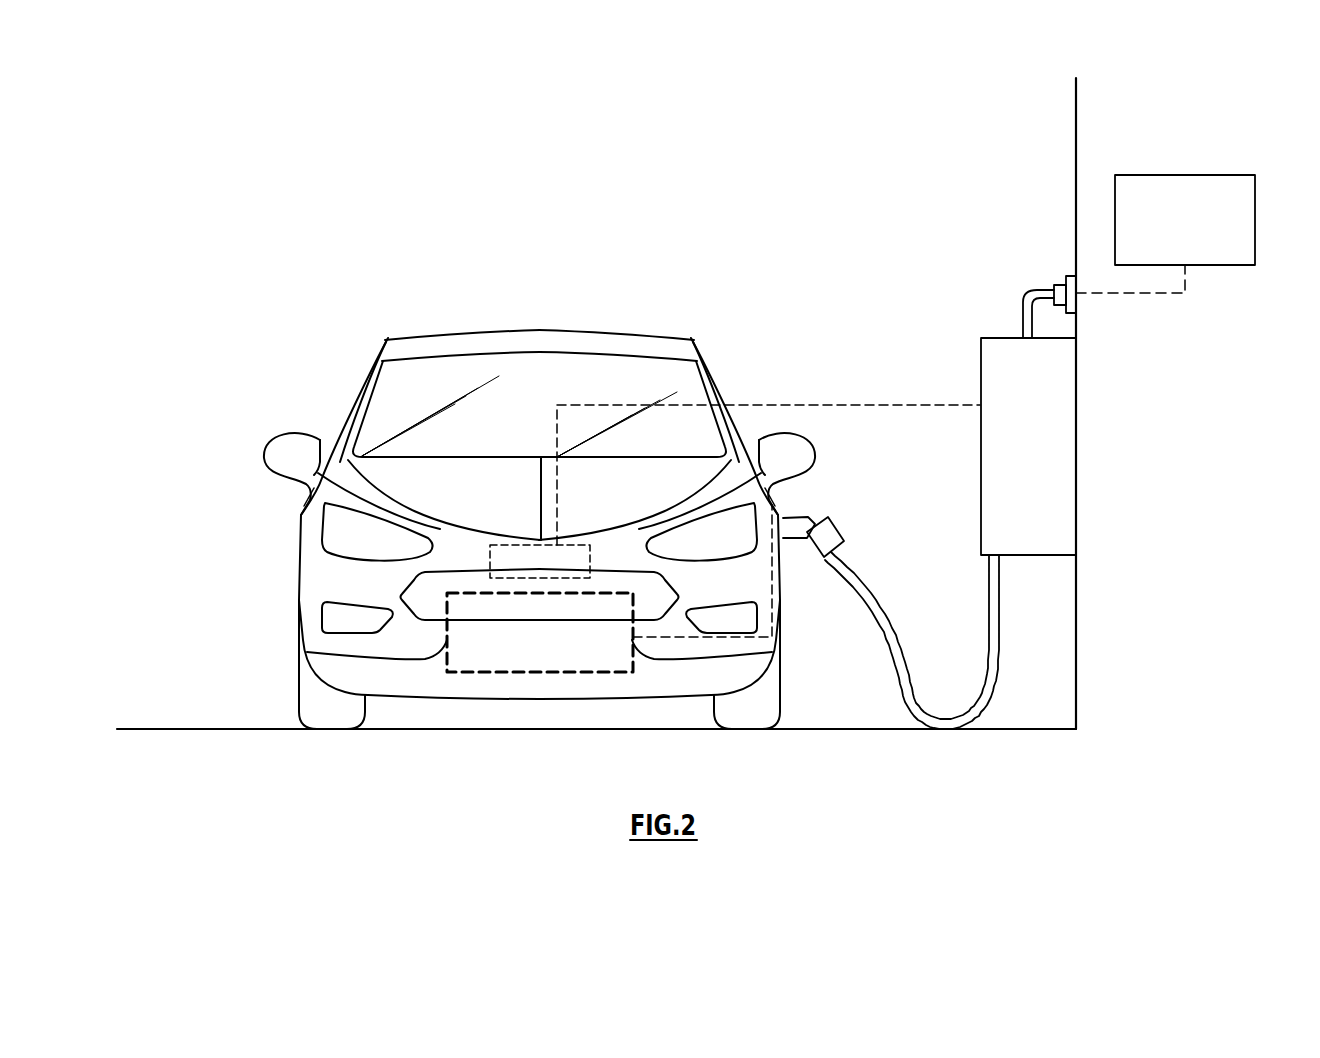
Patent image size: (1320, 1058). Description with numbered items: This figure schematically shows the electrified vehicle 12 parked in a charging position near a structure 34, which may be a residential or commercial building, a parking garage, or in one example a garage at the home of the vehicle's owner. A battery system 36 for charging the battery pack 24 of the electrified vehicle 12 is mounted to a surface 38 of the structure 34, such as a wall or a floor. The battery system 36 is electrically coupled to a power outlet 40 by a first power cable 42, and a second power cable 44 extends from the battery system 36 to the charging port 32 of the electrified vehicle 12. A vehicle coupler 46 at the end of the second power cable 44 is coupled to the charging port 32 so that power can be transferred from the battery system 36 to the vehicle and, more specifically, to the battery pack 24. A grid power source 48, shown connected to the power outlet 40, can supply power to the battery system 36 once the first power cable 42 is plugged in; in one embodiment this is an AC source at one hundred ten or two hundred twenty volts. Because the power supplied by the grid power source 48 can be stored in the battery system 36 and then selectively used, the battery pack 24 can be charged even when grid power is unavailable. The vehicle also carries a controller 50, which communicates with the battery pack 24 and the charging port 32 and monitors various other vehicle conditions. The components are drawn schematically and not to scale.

The electrified vehicle 12 is at (541, 332).
The battery pack 24 is at (555, 673).
The charging port 32 is at (794, 494).
The structure 34 is at (1091, 101).
The battery system 36 is at (981, 521).
The surface 38 is at (1066, 624).
The power outlet 40 is at (1071, 276).
The first power cable 42 is at (1027, 302).
The second power cable 44 is at (903, 652).
The vehicle coupler 46 is at (814, 530).
The grid power source 48 is at (1229, 175).
The controller 50 is at (490, 545).